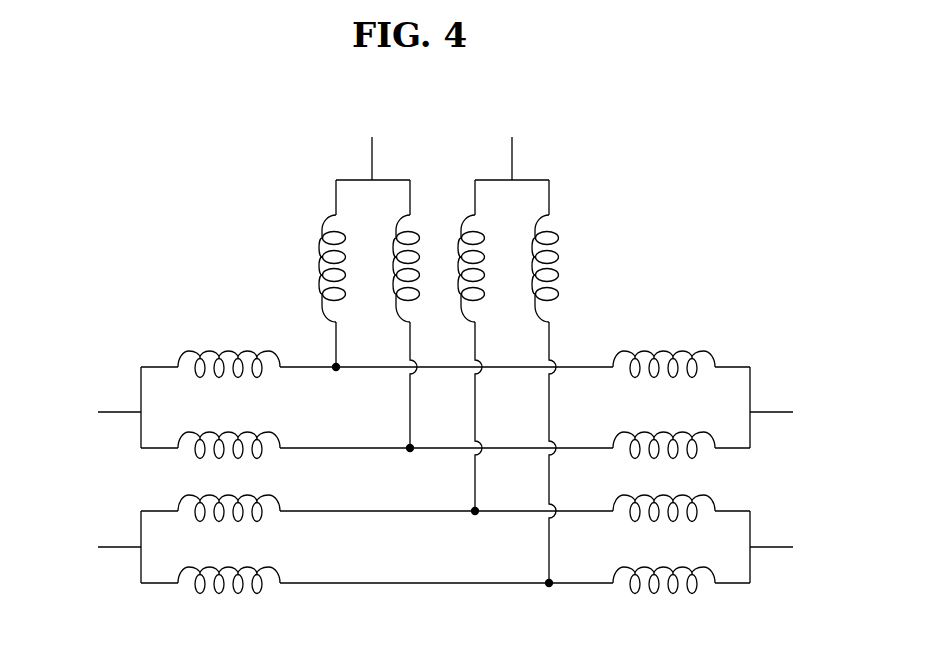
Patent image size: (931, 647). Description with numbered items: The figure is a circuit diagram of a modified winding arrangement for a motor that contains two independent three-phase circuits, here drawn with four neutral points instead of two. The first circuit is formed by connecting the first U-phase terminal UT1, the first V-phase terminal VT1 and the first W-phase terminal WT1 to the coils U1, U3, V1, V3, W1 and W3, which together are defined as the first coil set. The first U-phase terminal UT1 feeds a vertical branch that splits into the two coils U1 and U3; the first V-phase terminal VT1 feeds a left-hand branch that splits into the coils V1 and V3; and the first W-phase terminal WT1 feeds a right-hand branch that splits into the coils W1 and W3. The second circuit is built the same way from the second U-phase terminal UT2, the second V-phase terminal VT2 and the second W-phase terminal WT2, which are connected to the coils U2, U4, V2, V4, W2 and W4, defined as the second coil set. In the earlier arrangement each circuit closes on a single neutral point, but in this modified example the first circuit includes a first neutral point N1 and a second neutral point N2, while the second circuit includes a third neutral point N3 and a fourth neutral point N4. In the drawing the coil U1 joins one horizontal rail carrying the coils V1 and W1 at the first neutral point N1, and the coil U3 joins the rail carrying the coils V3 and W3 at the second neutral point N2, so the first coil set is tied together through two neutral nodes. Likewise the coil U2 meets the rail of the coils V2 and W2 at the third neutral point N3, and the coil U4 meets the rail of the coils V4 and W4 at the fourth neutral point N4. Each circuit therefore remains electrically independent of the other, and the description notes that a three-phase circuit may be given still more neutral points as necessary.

The first U-phase terminal UT1 is at (368, 146).
The second U-phase terminal UT2 is at (509, 146).
The first V-phase terminal VT1 is at (98, 413).
The second V-phase terminal VT2 is at (98, 548).
The first W-phase terminal WT1 is at (792, 413).
The second W-phase terminal WT2 is at (792, 548).
The coil U1 is at (320, 268).
The coil U2 is at (483, 268).
The coil U3 is at (394, 268).
The coil U4 is at (559, 268).
The coil V1 is at (229, 353).
The coil V2 is at (229, 498).
The coil V3 is at (229, 435).
The coil V4 is at (229, 571).
The coil W1 is at (664, 353).
The coil W2 is at (664, 498).
The coil W3 is at (664, 435).
The coil W4 is at (664, 571).
The first neutral point N1 is at (336, 380).
The second neutral point N2 is at (409, 462).
The third neutral point N3 is at (476, 525).
The fourth neutral point N4 is at (550, 597).